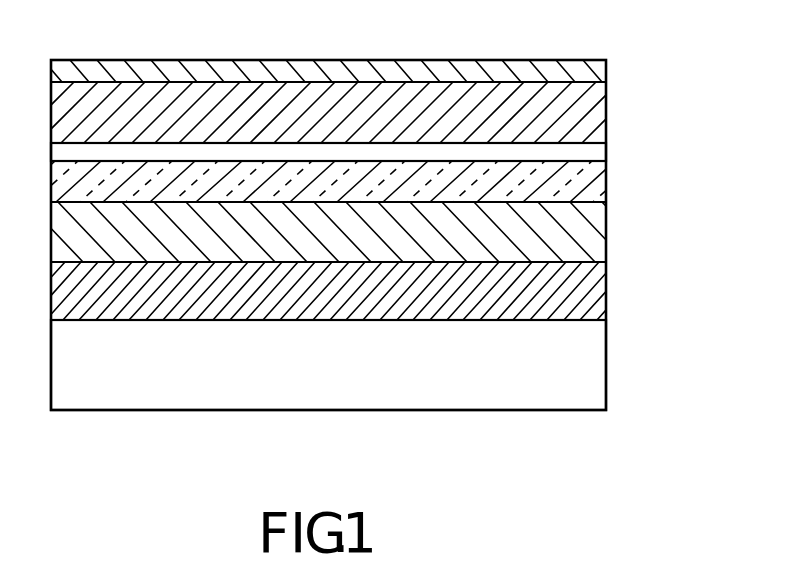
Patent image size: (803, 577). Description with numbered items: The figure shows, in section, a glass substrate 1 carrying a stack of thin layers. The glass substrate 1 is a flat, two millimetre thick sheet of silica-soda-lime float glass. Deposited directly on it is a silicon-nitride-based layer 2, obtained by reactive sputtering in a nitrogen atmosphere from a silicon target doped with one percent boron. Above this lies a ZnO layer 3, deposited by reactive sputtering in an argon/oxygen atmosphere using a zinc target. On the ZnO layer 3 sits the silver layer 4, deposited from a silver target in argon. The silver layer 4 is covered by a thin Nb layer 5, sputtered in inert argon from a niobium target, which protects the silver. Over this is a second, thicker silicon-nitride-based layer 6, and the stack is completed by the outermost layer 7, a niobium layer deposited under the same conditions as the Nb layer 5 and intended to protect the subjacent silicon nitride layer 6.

The glass substrate 1 is at (597, 373).
The silicon-nitride-based layer 2 is at (598, 297).
The ZnO layer 3 is at (598, 235).
The silver layer 4 is at (600, 183).
The Nb layer 5 is at (600, 153).
The silicon-nitride-based layer 6 is at (604, 108).
The layer according to the invention 7 is at (602, 70).